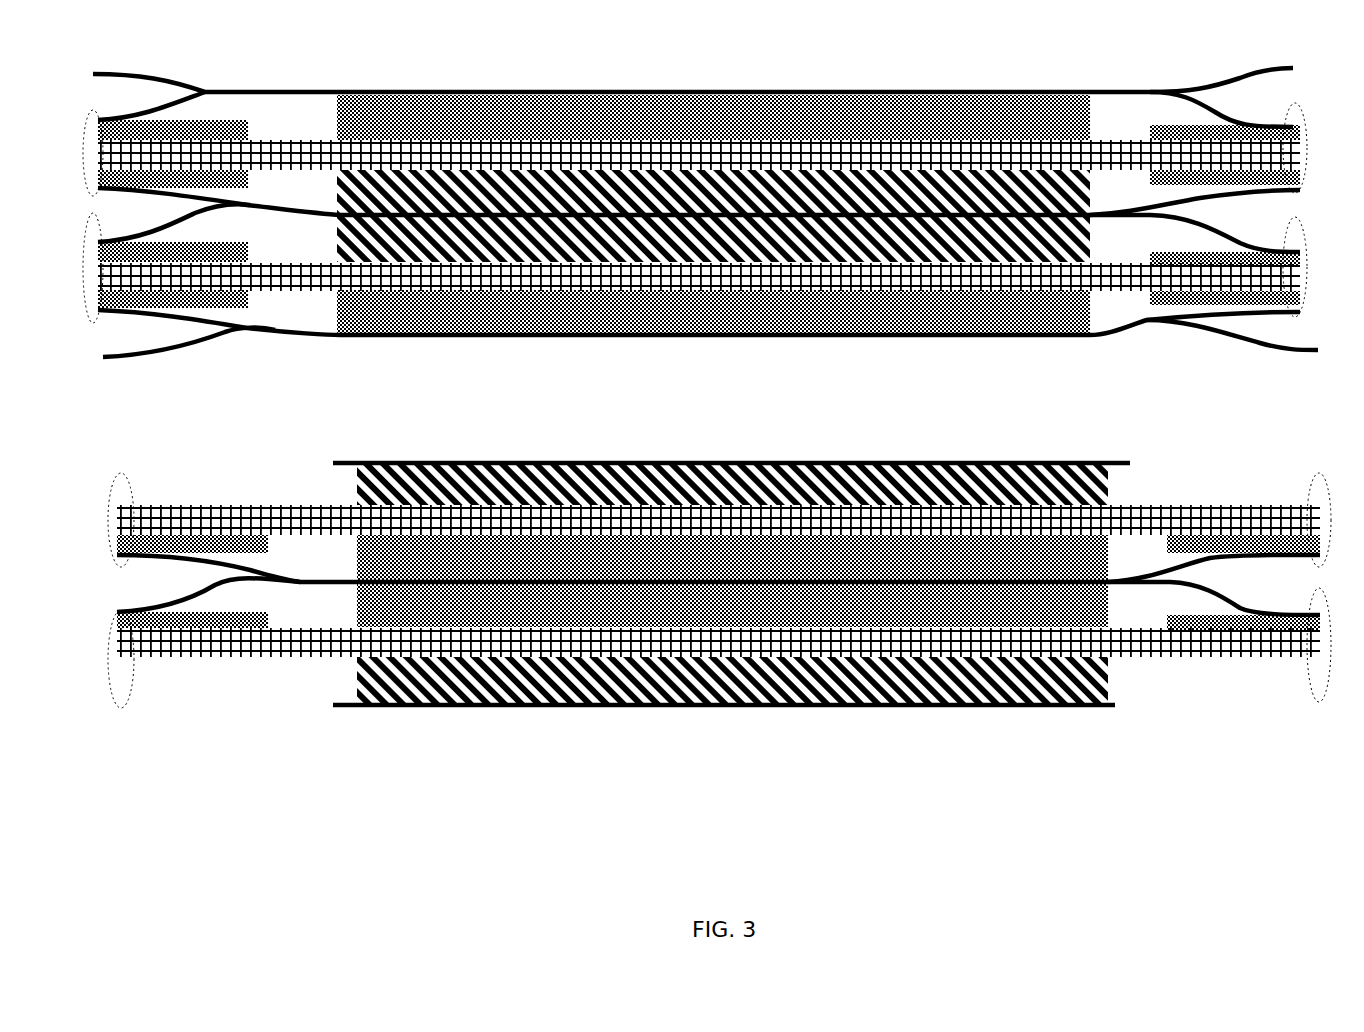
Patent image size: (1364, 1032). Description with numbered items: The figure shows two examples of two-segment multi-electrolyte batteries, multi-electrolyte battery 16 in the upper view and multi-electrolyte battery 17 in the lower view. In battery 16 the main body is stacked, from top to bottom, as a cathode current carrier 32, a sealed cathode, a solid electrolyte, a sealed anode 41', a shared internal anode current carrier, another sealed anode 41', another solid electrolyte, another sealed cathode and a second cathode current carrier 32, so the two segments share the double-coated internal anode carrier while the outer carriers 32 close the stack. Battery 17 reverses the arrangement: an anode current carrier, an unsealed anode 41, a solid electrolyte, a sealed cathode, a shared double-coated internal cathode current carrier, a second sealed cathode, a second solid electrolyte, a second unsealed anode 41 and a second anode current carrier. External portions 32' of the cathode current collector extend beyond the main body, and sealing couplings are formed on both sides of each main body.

The multi-electrolyte battery 16 is at (738, 380).
The multi-electrolyte battery 17 is at (727, 813).
The cathode current carrier 32 is at (705, 200).
The external portion of the cathode current collector 32' is at (606, 583).
The unsealed anode 41 is at (682, 584).
The sealed anode 41' is at (678, 216).